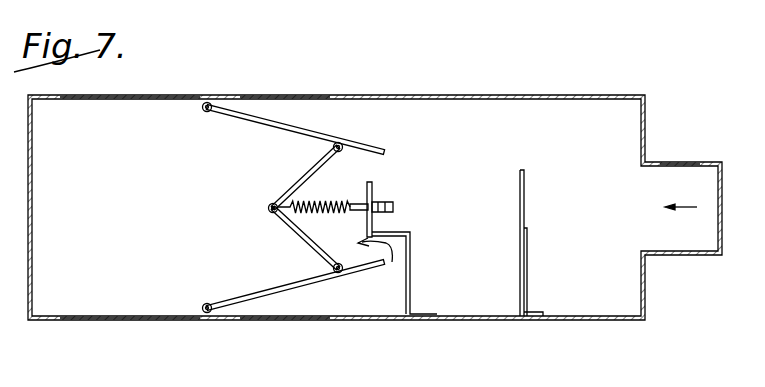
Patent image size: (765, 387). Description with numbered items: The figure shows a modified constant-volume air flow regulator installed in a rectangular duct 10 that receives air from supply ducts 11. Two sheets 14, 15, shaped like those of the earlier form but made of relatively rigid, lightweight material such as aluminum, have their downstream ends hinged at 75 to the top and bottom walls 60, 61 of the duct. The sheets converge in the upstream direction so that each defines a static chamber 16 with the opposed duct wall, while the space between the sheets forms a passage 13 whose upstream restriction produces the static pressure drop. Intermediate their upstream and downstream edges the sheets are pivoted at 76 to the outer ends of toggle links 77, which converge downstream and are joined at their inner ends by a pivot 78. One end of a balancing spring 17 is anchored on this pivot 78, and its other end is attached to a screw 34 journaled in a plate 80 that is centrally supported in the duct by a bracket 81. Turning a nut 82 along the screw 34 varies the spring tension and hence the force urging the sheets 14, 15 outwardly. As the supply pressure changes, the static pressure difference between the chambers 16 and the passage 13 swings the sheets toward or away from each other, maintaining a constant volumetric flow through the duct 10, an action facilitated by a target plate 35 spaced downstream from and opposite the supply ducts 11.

The rectangular duct 10 is at (529, 89).
The supply ducts 11 is at (688, 162).
The passage 13 is at (382, 268).
The sheet 14 is at (318, 132).
The sheet 15 is at (310, 280).
The static chambers 16 is at (292, 112).
The balancing spring 17 is at (328, 203).
The screw 34 is at (392, 204).
The target plate 35 is at (522, 175).
The top wall 60 is at (143, 94).
The bottom wall 61 is at (127, 321).
The hinge 75 is at (203, 112).
The pivot 76 is at (332, 148).
The toggle links 77 is at (300, 183).
The pivot 78 is at (268, 209).
The plate 80 is at (371, 184).
The bracket 81 is at (412, 250).
The nut 82 is at (378, 216).